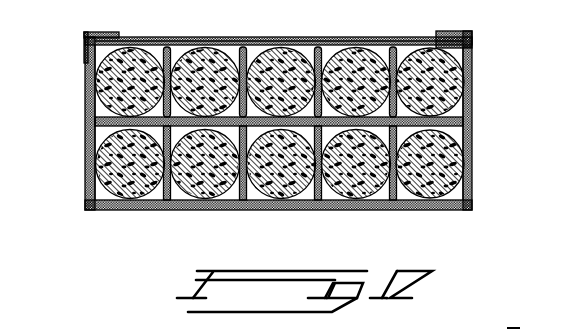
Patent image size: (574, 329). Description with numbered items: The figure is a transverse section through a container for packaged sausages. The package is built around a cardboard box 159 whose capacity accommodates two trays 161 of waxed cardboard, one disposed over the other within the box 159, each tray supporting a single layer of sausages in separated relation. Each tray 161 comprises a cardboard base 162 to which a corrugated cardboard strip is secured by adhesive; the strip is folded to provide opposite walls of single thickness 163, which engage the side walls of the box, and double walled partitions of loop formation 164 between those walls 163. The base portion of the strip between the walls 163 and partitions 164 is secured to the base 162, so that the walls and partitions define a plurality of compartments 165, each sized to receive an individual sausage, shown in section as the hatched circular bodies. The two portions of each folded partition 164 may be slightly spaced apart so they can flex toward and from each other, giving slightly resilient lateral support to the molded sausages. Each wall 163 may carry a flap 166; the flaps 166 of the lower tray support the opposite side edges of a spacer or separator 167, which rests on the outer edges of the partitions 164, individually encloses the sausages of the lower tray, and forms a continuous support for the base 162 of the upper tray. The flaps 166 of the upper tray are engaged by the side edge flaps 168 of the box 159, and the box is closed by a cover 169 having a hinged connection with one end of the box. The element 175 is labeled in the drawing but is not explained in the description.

The bottom wall of container 159 is at (89, 177).
The side wall 161 is at (87, 73).
The end wall 162 is at (470, 117).
The inner lining 163 is at (471, 90).
The top wall 164 is at (300, 37).
The cell 165 is at (190, 44).
The flange 166 is at (466, 46).
The middle partition 167 is at (92, 123).
The flap 168 is at (122, 34).
The cover layer 169 is at (146, 38).
The divider 175 is at (247, 42).